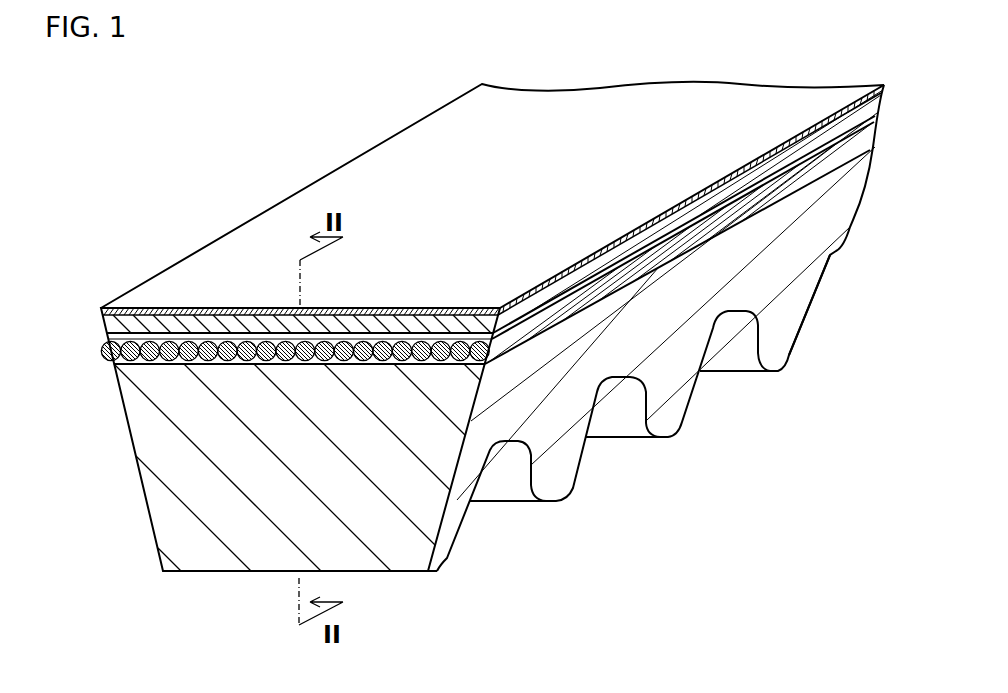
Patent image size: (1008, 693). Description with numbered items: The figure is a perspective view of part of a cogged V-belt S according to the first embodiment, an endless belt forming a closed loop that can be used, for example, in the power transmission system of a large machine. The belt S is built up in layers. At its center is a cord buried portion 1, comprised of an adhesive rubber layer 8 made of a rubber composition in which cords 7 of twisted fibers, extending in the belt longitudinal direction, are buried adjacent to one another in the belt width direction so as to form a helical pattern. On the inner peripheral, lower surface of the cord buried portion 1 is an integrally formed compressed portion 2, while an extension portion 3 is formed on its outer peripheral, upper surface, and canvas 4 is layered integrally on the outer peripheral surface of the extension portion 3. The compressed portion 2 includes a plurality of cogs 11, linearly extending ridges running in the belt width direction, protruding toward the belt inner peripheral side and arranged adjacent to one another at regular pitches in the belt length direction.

The cord buried portion 1 is at (96, 353).
The compressed portion 2 is at (143, 442).
The extension portion 3 is at (108, 324).
The canvas 4 is at (101, 310).
The cord 7 is at (190, 343).
The adhesive rubber layer 8 is at (139, 340).
The cog 11 is at (569, 475).
The cogged V-belt S is at (278, 142).